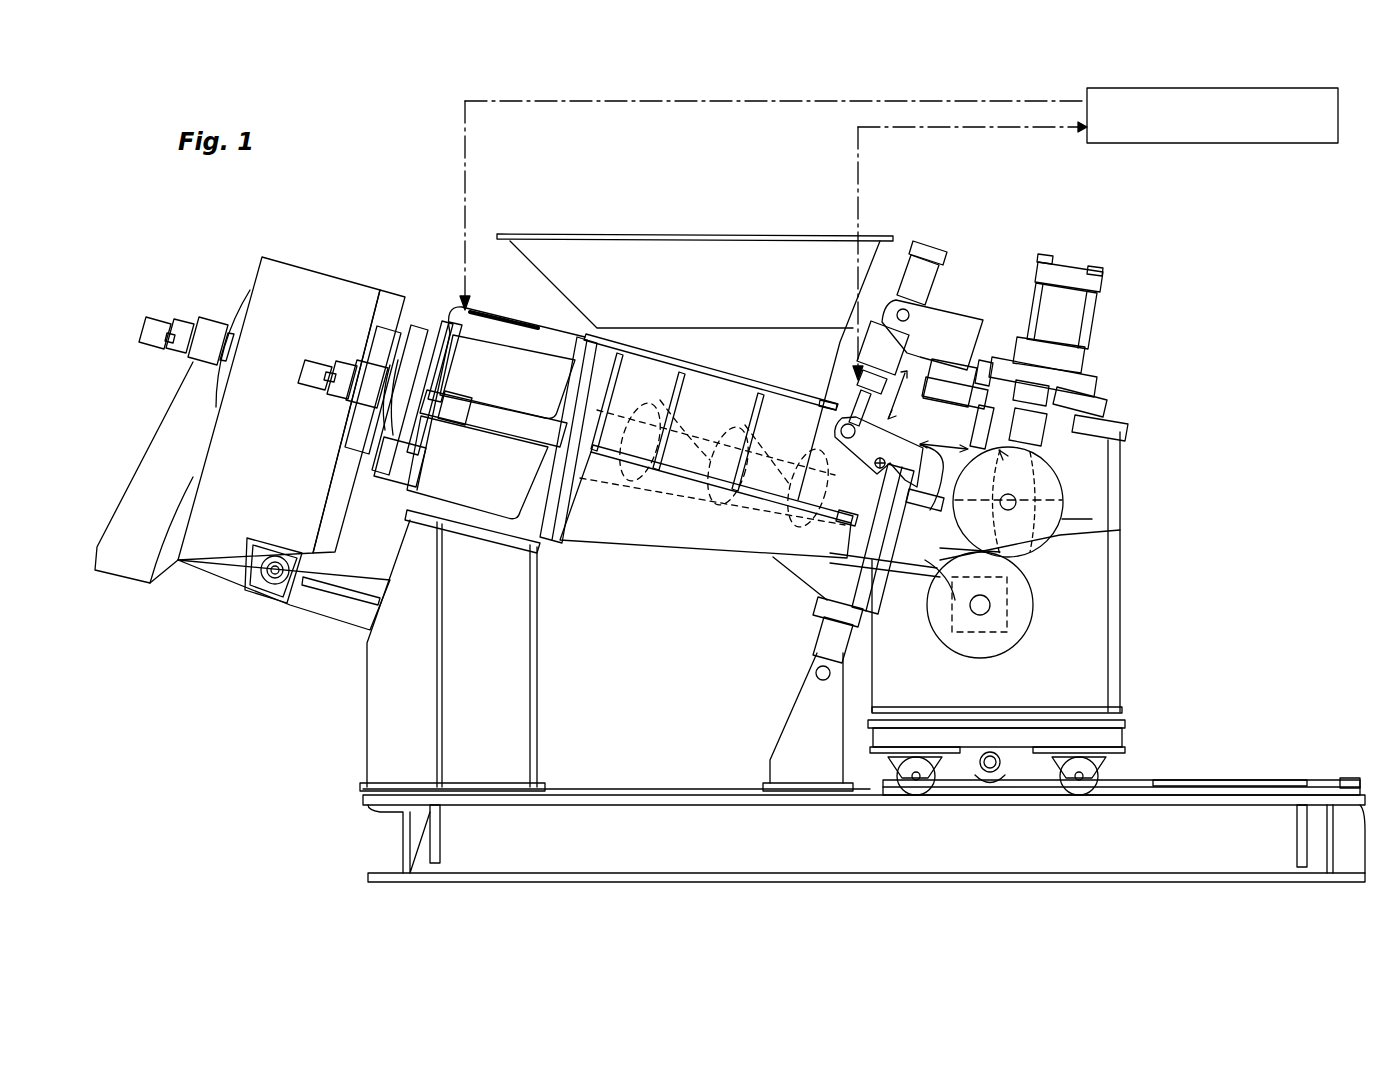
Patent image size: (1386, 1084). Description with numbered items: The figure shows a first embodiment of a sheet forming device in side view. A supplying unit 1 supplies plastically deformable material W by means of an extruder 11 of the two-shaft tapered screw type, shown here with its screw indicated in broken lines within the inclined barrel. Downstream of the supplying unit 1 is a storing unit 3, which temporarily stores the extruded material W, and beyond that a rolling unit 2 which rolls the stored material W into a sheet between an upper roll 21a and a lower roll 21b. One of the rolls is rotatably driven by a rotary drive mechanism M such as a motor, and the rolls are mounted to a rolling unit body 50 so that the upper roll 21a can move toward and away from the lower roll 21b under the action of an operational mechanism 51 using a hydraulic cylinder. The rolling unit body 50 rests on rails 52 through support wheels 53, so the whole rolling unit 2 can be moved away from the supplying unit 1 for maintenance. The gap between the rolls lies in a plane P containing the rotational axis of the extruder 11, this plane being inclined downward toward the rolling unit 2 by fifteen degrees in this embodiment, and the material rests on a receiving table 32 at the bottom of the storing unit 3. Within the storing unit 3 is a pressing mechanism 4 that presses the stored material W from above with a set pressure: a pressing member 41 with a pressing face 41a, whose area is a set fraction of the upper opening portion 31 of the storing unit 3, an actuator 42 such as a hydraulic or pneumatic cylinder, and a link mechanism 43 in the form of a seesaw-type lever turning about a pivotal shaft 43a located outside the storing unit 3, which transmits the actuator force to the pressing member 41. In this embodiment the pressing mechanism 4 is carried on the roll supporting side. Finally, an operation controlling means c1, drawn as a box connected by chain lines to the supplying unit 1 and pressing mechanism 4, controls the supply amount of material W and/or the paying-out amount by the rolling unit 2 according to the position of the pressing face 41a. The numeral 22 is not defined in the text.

The supplying unit 1 is at (780, 236).
The rolling unit 2 is at (1118, 394).
The storing unit 3 is at (873, 663).
The pressing mechanism 4 is at (946, 294).
The extruder 11 is at (752, 538).
The upper roll 21a is at (1066, 500).
The lower roll 21b is at (1000, 645).
The nip between rollers 22 is at (1022, 558).
The upper opening portion 31 is at (985, 455).
The receiving table 32 is at (922, 574).
The pressing member 41 is at (897, 581).
The pressing face 41a is at (903, 540).
The actuator 42 is at (902, 254).
The link mechanism 43 is at (868, 446).
The pivotal shaft 43a is at (828, 403).
The rolling unit body 50 is at (1123, 596).
The operational mechanism 51 is at (1090, 327).
The rails 52 is at (1222, 781).
The support wheels 53 is at (918, 792).
The rotary drive mechanism M is at (1007, 607).
The plane P is at (827, 567).
The material W is at (1062, 536).
The operation controlling means c1 is at (1338, 120).